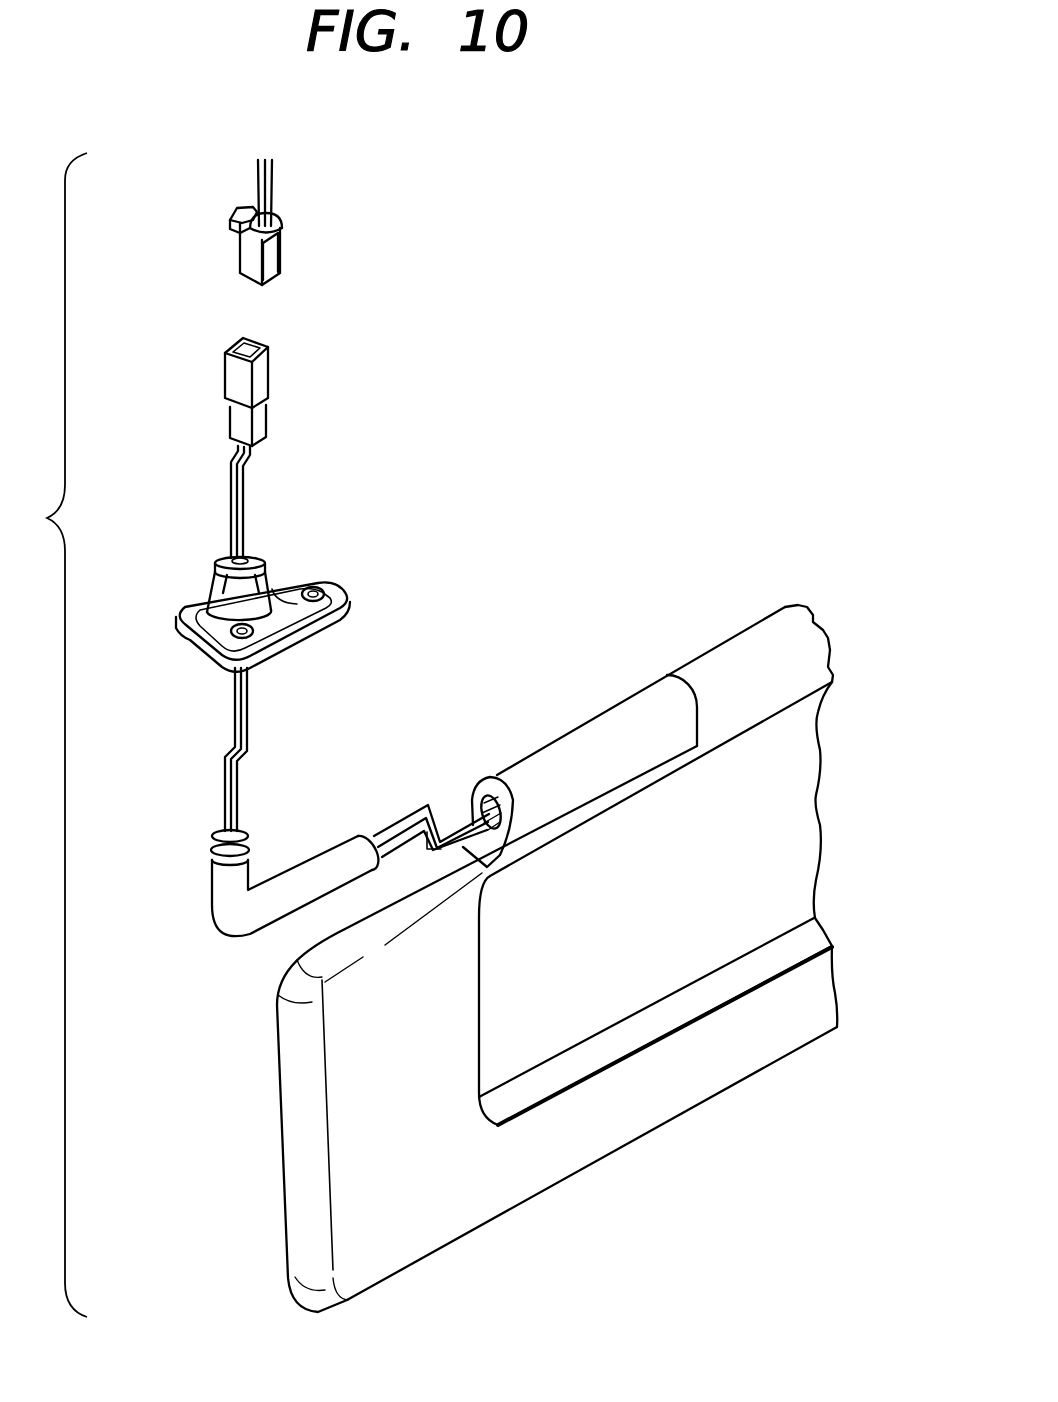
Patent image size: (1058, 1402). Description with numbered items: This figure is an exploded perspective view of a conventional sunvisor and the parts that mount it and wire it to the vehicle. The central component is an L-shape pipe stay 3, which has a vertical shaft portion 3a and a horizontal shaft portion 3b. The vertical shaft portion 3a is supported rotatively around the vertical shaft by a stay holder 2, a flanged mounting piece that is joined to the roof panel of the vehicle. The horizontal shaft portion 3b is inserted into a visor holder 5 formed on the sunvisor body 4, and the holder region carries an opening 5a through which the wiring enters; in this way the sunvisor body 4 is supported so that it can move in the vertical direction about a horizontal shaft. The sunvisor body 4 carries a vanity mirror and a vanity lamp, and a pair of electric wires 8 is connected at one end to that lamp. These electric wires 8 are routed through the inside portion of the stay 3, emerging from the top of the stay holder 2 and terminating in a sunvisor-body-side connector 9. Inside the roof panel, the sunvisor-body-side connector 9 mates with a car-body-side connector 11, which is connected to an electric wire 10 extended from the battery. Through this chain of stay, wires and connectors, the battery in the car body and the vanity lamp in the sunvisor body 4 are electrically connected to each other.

The stay holder 2 is at (338, 595).
The L-shape pipe stay 3 is at (228, 917).
The vertical shaft portion 3a is at (213, 884).
The horizontal shaft portion 3b is at (330, 855).
The sunvisor body 4 is at (302, 1137).
The visor holder 5 is at (628, 735).
The wire holder 5a is at (476, 797).
The electric wires 8 is at (393, 815).
The sunvisor-body-side connector 9 is at (276, 388).
The electric wire 10 is at (270, 189).
The car-body-side connector 11 is at (288, 258).